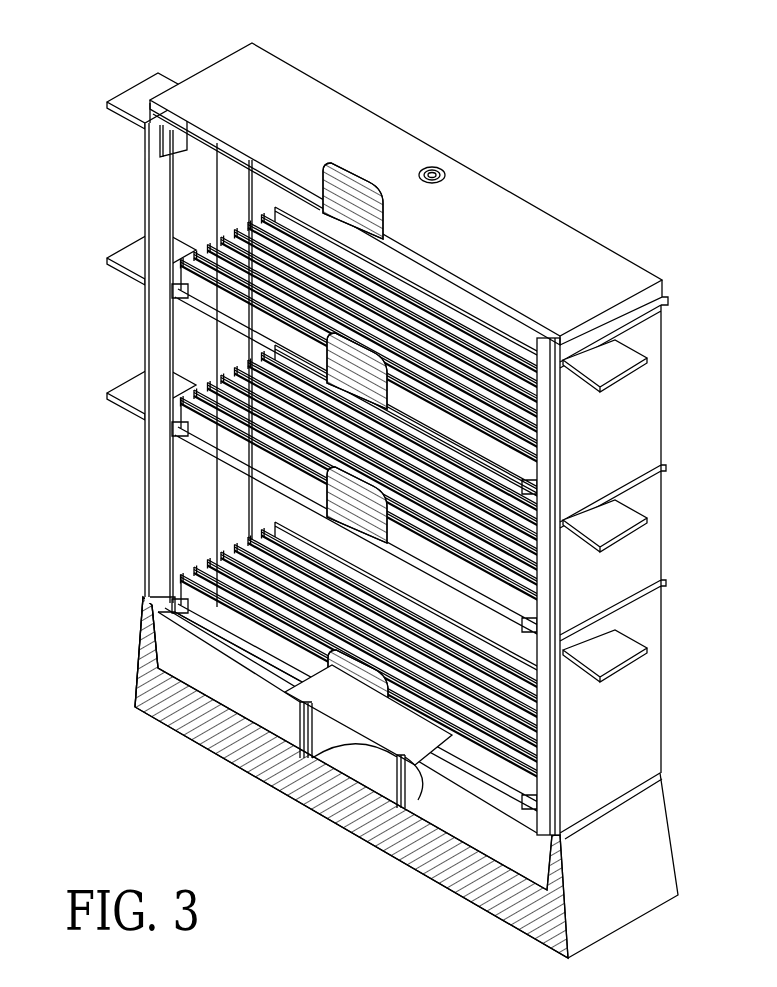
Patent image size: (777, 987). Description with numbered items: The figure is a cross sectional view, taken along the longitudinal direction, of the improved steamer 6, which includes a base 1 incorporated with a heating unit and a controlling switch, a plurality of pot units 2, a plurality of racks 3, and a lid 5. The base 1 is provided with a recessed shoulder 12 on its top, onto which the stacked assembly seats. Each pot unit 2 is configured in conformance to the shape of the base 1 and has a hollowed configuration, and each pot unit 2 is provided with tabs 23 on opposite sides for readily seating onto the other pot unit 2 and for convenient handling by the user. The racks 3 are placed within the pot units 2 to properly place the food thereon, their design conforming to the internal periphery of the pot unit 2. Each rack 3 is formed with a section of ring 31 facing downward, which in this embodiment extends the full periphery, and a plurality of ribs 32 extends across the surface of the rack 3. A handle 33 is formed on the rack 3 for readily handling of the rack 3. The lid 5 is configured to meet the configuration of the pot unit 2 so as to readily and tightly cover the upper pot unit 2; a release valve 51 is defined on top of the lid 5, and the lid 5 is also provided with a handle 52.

The base 1 is at (630, 912).
The pot unit 2 is at (650, 708).
The rack 3 is at (225, 605).
The lid 5 is at (518, 233).
The steamer 6 is at (547, 113).
The recessed shoulder 12 is at (147, 598).
The tab 23 is at (130, 393).
The ring 31 is at (155, 618).
The rib 32 is at (222, 585).
The handle 33 is at (215, 706).
The release valve 51 is at (436, 170).
The handle 52 is at (348, 178).